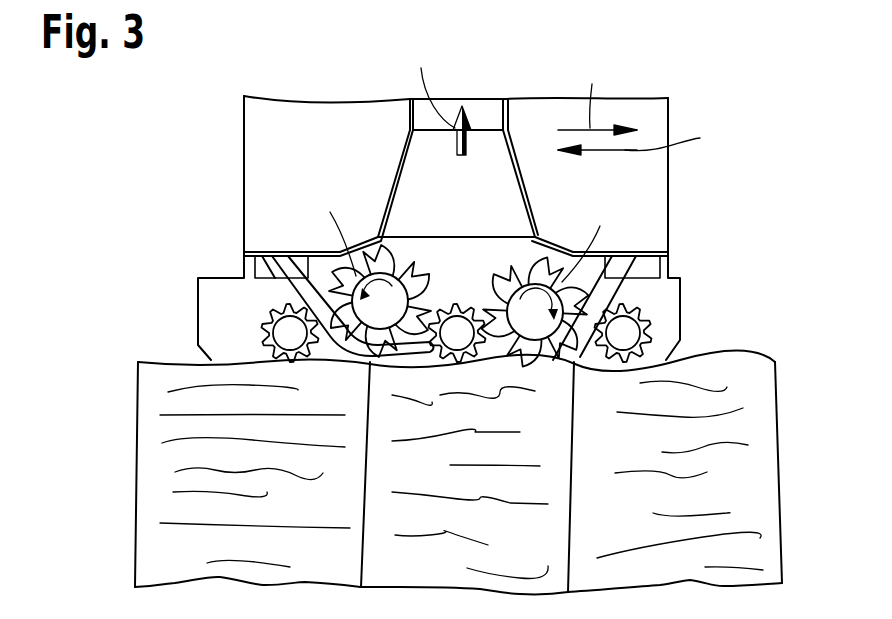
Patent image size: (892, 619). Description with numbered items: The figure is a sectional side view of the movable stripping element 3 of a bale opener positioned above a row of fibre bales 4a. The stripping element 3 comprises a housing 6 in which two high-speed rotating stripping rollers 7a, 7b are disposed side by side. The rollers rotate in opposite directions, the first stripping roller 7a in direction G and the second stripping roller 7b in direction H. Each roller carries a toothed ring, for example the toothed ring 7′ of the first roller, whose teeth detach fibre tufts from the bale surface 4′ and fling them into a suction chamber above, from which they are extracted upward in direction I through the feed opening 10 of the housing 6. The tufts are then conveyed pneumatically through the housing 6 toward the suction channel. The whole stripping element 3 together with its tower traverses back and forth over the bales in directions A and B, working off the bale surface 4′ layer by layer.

The stripping element 3 is at (236, 155).
The feed hopper 10 is at (485, 118).
The housing 6 is at (656, 211).
The stripping roller 7a is at (403, 272).
The stripping roller 7b is at (515, 281).
The toothed ring 7′ is at (345, 288).
The bale surface 4′ is at (714, 348).
The fibre bales 4a is at (150, 493).